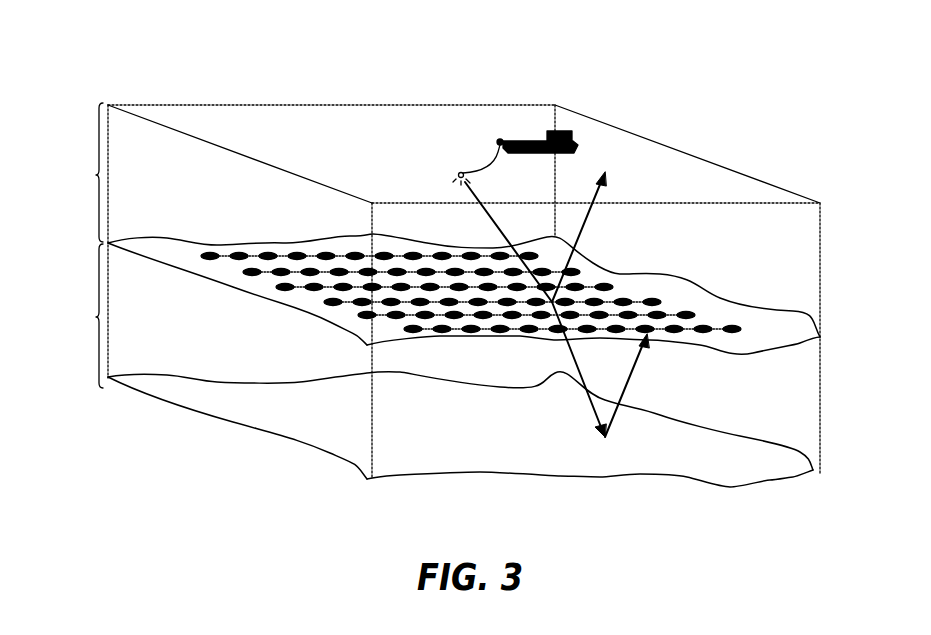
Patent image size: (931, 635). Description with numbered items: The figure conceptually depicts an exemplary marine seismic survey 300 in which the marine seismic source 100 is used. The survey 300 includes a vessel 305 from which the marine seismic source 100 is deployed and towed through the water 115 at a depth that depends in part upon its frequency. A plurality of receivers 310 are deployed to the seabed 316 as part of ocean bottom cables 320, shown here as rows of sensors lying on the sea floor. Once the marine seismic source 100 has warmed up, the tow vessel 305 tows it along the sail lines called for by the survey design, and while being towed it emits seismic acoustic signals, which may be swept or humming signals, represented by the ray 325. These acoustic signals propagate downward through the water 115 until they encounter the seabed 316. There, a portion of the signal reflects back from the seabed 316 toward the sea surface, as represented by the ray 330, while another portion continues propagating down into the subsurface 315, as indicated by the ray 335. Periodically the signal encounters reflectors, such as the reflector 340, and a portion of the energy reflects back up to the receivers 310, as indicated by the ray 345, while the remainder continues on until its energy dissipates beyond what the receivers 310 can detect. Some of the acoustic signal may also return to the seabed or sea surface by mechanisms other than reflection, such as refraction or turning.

The marine seismic survey 300 is at (144, 37).
The water 115 is at (81, 172).
The subsurface 315 is at (81, 316).
The seabed 316 is at (218, 218).
The marine seismic source 100 is at (458, 171).
The vessel 305 is at (538, 140).
The receivers 310 is at (702, 333).
The ocean bottom cables 320 is at (675, 314).
The ray 325 is at (490, 217).
The ray 330 is at (596, 215).
The ray 335 is at (590, 408).
The ray 345 is at (640, 375).
The reflector 340 is at (341, 462).